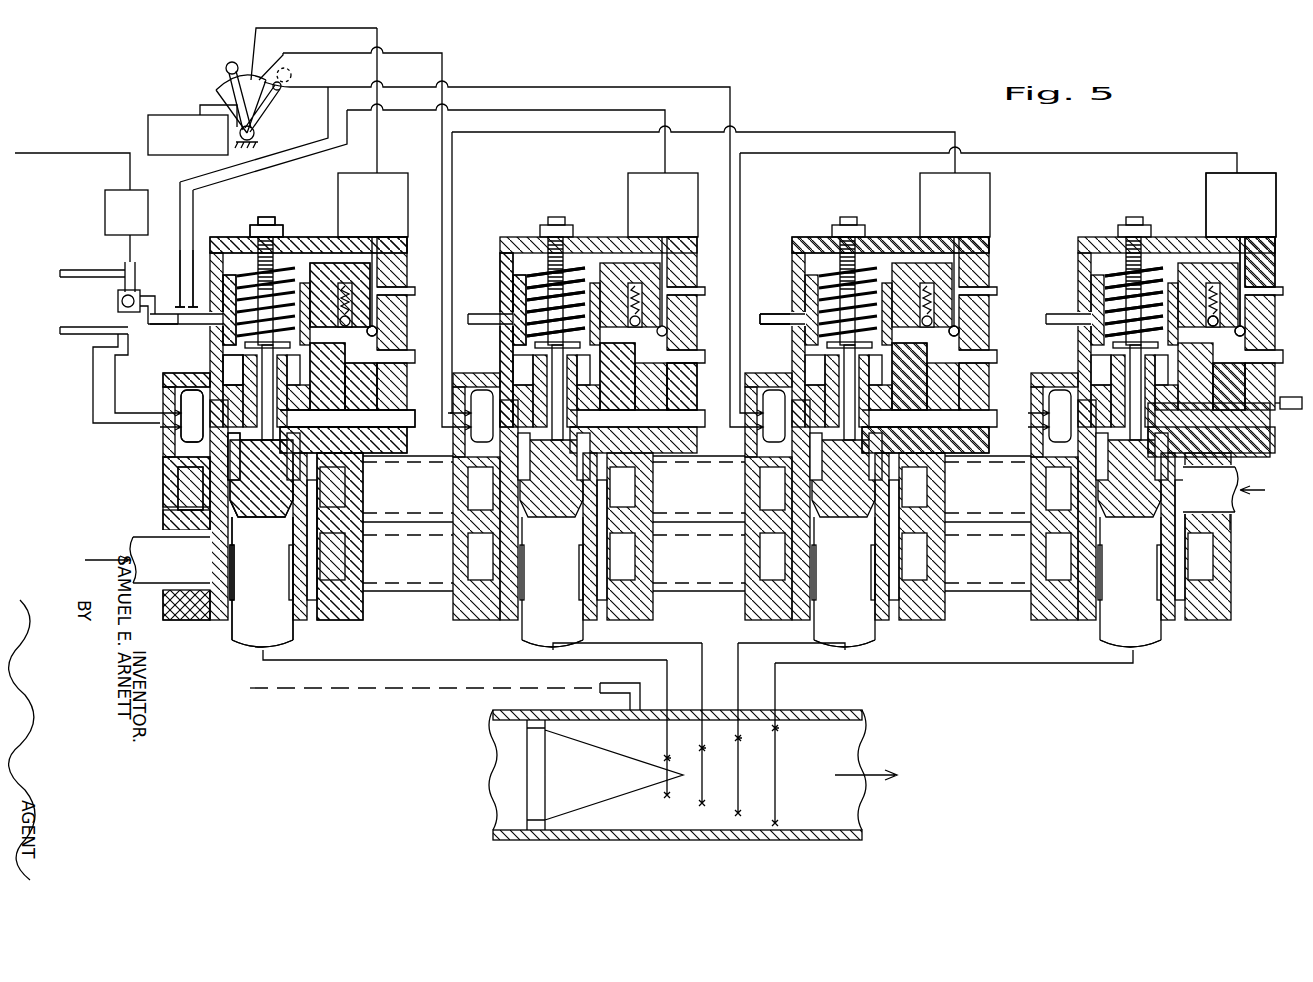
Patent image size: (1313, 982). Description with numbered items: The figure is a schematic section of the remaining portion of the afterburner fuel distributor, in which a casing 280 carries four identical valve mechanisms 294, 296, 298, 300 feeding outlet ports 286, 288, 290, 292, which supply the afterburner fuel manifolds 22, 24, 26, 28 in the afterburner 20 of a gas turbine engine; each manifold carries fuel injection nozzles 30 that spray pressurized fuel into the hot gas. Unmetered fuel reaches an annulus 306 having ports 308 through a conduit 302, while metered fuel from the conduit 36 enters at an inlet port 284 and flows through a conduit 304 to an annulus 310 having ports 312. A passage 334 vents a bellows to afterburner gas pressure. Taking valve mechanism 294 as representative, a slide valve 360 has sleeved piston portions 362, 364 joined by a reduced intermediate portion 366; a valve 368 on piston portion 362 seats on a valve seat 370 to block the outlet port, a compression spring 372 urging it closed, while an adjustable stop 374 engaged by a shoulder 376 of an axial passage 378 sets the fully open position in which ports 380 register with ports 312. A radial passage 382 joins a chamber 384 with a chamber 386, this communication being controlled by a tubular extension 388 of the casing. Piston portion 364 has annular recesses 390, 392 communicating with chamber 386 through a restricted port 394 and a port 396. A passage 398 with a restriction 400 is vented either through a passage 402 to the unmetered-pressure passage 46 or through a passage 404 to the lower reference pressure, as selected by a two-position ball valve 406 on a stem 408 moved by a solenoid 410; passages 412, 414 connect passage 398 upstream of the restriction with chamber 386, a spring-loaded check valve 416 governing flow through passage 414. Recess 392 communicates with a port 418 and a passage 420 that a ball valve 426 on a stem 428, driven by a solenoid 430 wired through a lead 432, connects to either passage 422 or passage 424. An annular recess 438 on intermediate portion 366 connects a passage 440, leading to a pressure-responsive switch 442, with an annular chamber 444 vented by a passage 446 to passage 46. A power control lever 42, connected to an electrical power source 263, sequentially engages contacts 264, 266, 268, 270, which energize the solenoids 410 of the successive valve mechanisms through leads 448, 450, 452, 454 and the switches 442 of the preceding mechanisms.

The afterburner portion 20 is at (645, 850).
The afterburner fuel manifold 22 is at (665, 796).
The afterburner fuel manifold 24 is at (700, 806).
The afterburner fuel manifold 26 is at (736, 815).
The afterburner fuel manifold 28 is at (774, 820).
The fuel injection nozzles 30 is at (668, 758).
The conduit 36 is at (1238, 510).
The power control lever 42 is at (226, 68).
The passage 46 is at (1290, 410).
The electrical power source 263 is at (178, 116).
The contact 264 is at (254, 64).
The contact 266 is at (254, 42).
The contact 268 is at (268, 110).
The contact 270 is at (278, 90).
The casing 280 is at (1262, 451).
The inlet port 284 is at (1235, 540).
The outlet port 286 is at (256, 645).
The outlet port 288 is at (540, 626).
The outlet port 290 is at (858, 641).
The outlet port 292 is at (1100, 628).
The valve mechanism 294 is at (290, 219).
The valve mechanism 296 is at (554, 219).
The valve mechanism 298 is at (854, 219).
The valve mechanism 300 is at (1136, 217).
The conduit 302 is at (168, 600).
The conduit 304 is at (698, 430).
The annulus 306 is at (331, 621).
The ports 308 is at (163, 538).
The annulus 310 is at (182, 453).
The ports 312 is at (180, 505).
The passage 334 is at (600, 686).
The slide valve 360 is at (458, 496).
The sleeved piston portion 362 is at (243, 547).
The sleeved piston portion 364 is at (238, 237).
The intermediate portion 366 is at (205, 380).
The valve 368 is at (278, 505).
The valve seat 370 is at (234, 568).
The compression spring 372 is at (368, 326).
The adjustable stop 374 is at (262, 216).
The shoulder 376 is at (525, 366).
The axial passage 378 is at (323, 383).
The ports 380 is at (240, 511).
The radial passage 382 is at (241, 458).
The chamber 384 is at (312, 440).
The chamber 386 is at (222, 350).
The tubular extension 388 is at (182, 486).
The annular recess 390 is at (316, 366).
The annular recess 392 is at (326, 262).
The restricted port 394 is at (612, 376).
The port 396 is at (573, 296).
The passage 398 is at (1156, 300).
The restriction 400 is at (1211, 326).
The passage 402 is at (1266, 283).
The passage 404 is at (1250, 358).
The ball valve 406 is at (1246, 333).
The stem 408 is at (1242, 252).
The solenoid 410 is at (1241, 205).
The passage 412 is at (905, 372).
The passage 414 is at (900, 238).
The check valve 416 is at (960, 327).
The port 418 is at (180, 300).
The passage 420 is at (174, 315).
The passage 422 is at (95, 279).
The passage 424 is at (75, 337).
The ball valve 426 is at (120, 303).
The stem 428 is at (124, 266).
The solenoid 430 is at (126, 212).
The lead 432 is at (62, 153).
The annular recess 438 is at (240, 379).
The passage 440 is at (178, 441).
The pressure responsive switch 442 is at (92, 400).
The annular chamber 444 is at (912, 436).
The passage 446 is at (399, 410).
The lead 448 is at (377, 135).
The lead 450 is at (268, 157).
The lead 452 is at (452, 175).
The lead 454 is at (733, 195).